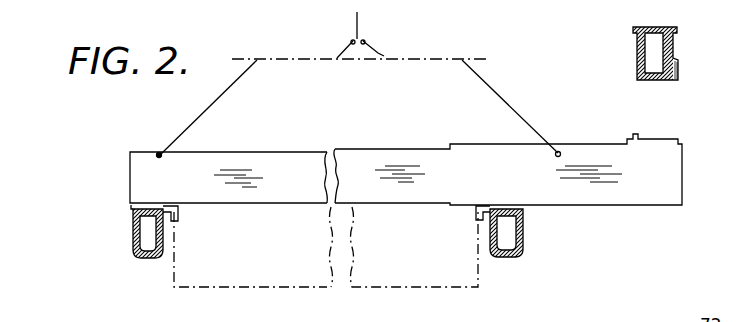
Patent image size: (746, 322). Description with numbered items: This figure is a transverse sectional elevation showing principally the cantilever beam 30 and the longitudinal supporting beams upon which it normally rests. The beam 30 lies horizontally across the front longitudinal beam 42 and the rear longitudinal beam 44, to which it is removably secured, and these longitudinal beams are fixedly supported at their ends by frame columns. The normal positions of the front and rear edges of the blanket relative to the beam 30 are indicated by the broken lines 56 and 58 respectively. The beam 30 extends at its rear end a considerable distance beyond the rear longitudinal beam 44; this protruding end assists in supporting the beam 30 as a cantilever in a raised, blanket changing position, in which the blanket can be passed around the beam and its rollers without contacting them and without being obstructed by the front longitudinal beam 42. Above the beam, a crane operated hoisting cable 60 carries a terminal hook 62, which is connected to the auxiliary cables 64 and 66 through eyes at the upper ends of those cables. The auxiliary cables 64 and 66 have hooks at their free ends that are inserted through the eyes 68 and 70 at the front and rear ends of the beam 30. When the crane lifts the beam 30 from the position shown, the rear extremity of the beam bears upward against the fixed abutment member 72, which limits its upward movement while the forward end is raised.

The beam 30 is at (473, 152).
The front longitudinal beam 42 is at (133, 248).
The rear longitudinal beam 44 is at (523, 248).
The broken line 56 is at (179, 264).
The broken line 58 is at (477, 246).
The hoisting cable 60 is at (358, 15).
The terminal hook 62 is at (351, 41).
The auxiliary cable 64 is at (216, 99).
The auxiliary cable 66 is at (513, 102).
The eye 68 is at (158, 151).
The eye 70 is at (560, 150).
The fixed abutment member 72 is at (678, 47).